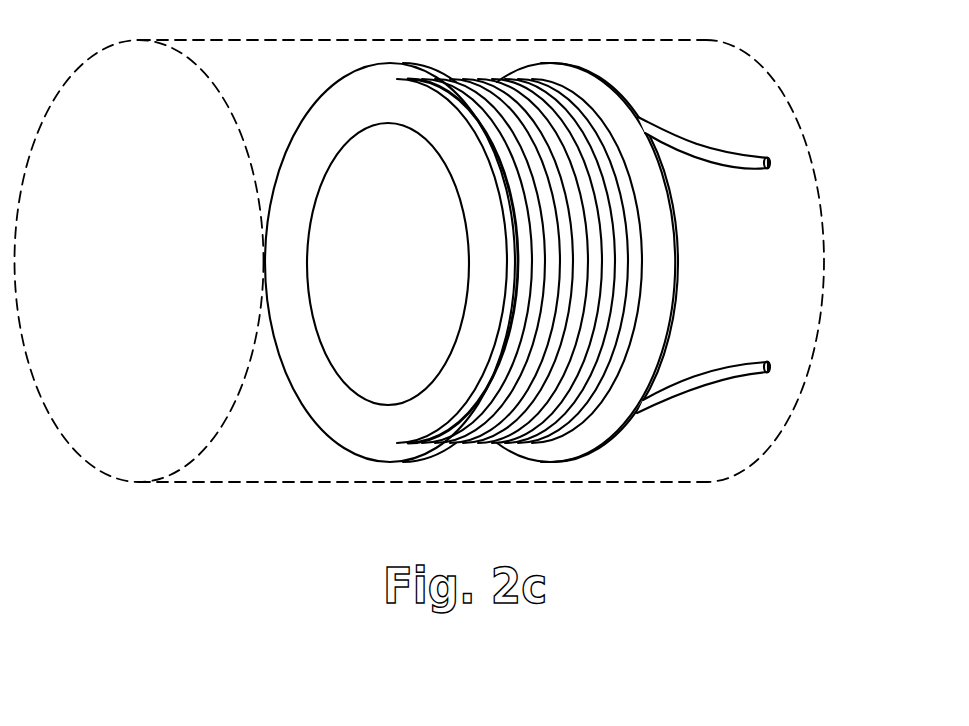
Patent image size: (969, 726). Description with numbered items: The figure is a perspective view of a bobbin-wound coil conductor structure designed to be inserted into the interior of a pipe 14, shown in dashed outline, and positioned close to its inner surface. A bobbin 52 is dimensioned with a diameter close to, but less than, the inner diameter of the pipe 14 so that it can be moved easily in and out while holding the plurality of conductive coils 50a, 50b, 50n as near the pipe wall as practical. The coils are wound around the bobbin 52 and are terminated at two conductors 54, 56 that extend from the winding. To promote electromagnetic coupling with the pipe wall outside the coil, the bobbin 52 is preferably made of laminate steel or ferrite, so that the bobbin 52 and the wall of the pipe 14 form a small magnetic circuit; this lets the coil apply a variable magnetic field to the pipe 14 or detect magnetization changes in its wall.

The pipe 14 is at (627, 486).
The bobbin 52 is at (318, 134).
The conductive coil 50a is at (635, 219).
The conductive coil 50b is at (623, 282).
The conductive coil 50n is at (522, 254).
The conductor 54 is at (697, 145).
The conductor 56 is at (690, 385).